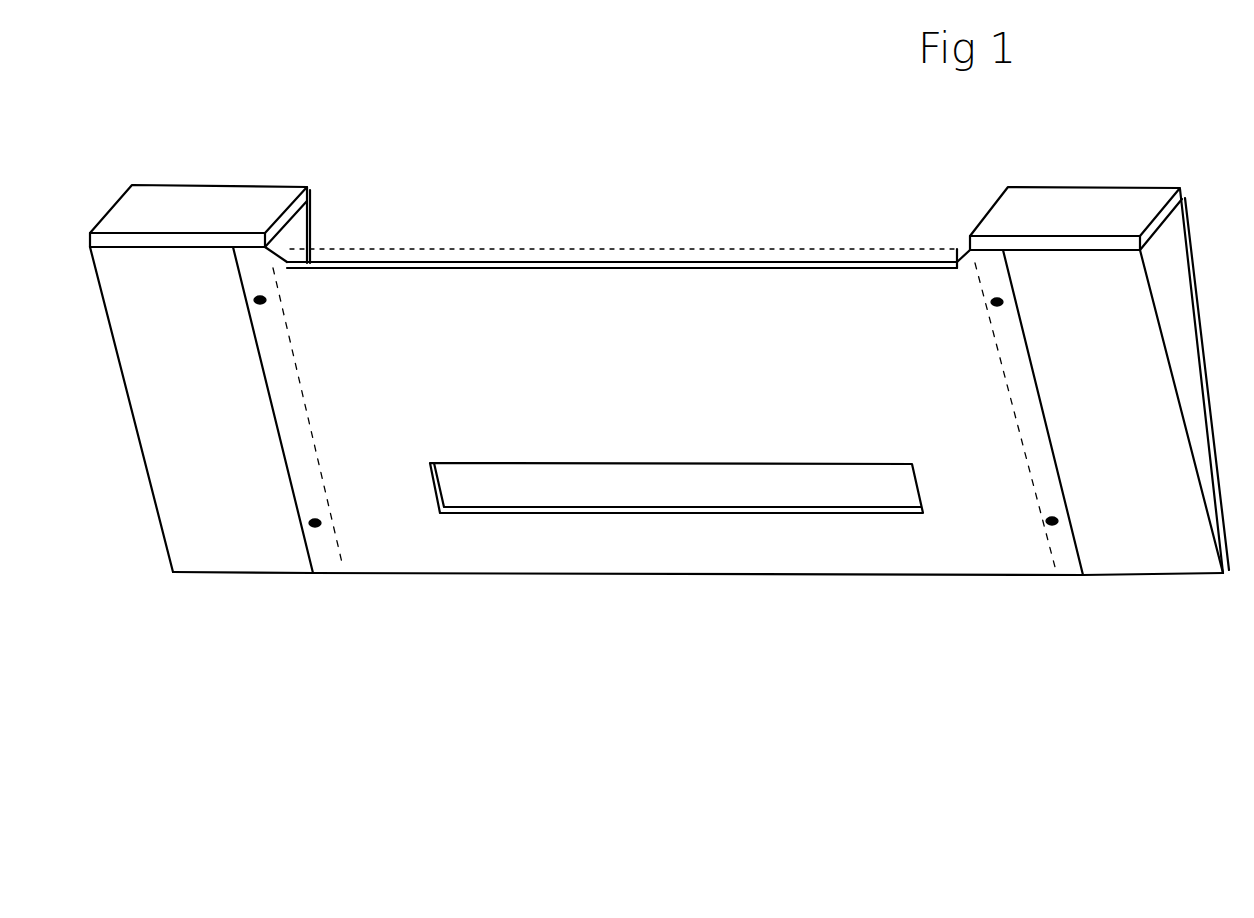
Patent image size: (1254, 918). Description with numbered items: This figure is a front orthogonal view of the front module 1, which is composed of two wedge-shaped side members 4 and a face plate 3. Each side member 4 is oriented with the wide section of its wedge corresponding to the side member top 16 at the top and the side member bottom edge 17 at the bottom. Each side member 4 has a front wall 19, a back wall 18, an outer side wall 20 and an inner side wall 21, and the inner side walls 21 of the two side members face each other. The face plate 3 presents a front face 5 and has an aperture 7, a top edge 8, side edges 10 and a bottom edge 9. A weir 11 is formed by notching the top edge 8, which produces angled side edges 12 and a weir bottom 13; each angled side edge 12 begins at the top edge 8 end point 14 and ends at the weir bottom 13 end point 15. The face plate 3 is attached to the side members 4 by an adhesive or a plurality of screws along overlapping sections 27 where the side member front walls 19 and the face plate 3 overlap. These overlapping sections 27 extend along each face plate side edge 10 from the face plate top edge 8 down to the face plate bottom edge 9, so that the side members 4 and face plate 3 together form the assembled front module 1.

The front module 1 is at (598, 152).
The face plate 3 is at (575, 607).
The side member 4 is at (636, 199).
The front face 5 is at (667, 392).
The aperture 7 is at (676, 488).
The top edge 8 is at (267, 247).
The bottom edge 9 is at (935, 575).
The side edge 10 is at (295, 500).
The weir 11 is at (562, 255).
The angled side edge 12 is at (283, 250).
The weir bottom 13 is at (735, 265).
The top edge end point 14 is at (285, 243).
The weir bottom end point 15 is at (300, 270).
The side member top 16 is at (635, 210).
The side member bottom edge 17 is at (262, 573).
The back wall 18 is at (250, 183).
The front wall 19 is at (656, 411).
The outer side wall 20 is at (1194, 381).
The inner side wall 21 is at (290, 236).
The overlapping section 27 is at (290, 410).